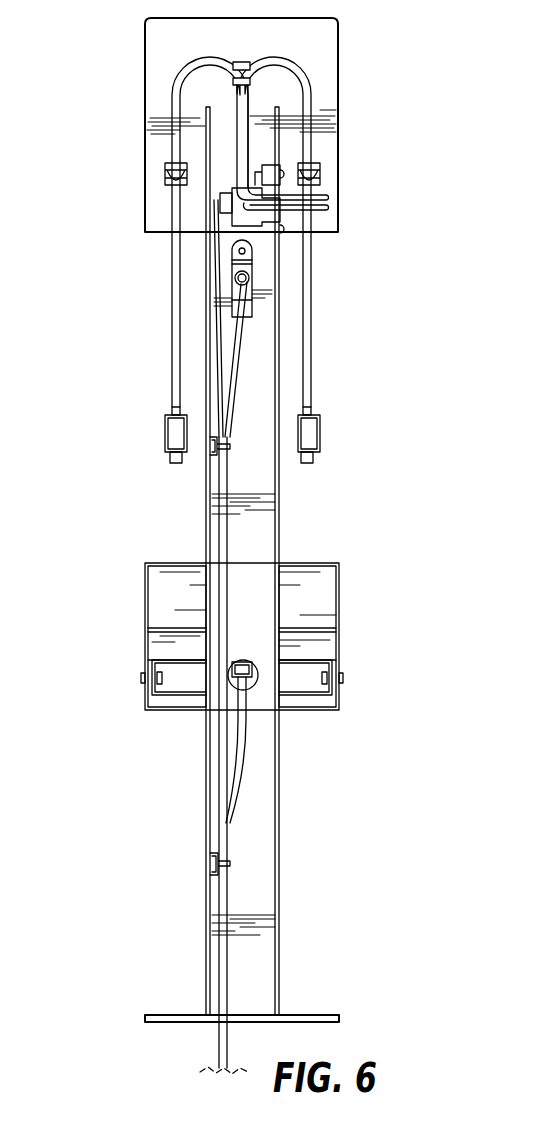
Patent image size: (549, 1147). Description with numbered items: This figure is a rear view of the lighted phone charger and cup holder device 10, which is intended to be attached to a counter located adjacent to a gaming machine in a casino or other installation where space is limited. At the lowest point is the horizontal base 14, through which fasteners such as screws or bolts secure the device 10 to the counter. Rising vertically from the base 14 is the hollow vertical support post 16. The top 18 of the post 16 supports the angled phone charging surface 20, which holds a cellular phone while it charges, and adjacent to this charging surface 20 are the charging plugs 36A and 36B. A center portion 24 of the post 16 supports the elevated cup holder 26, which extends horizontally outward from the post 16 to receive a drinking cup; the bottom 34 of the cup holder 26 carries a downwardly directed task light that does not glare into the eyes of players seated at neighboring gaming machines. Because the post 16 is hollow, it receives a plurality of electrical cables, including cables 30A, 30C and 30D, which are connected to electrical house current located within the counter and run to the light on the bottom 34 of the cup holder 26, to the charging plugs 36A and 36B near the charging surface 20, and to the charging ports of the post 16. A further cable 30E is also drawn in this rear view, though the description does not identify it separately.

The lighted phone charger and cup holder device 10 is at (88, 128).
The horizontal base 14 is at (317, 1015).
The hollow vertical support post 16 is at (280, 505).
The top of the post 18 is at (300, 148).
The angled phone charging surface 20 is at (322, 42).
The center portion of the post 24 is at (255, 548).
The elevated cup holder 26 is at (163, 594).
The electrical cable 30A is at (243, 764).
The electrical cable 30C is at (170, 312).
The electrical cable 30D is at (313, 311).
The link rod 30E is at (240, 340).
The bottom of the cup holder 34 is at (170, 712).
The charging plug 36A is at (165, 440).
The charging plug 36B is at (322, 434).